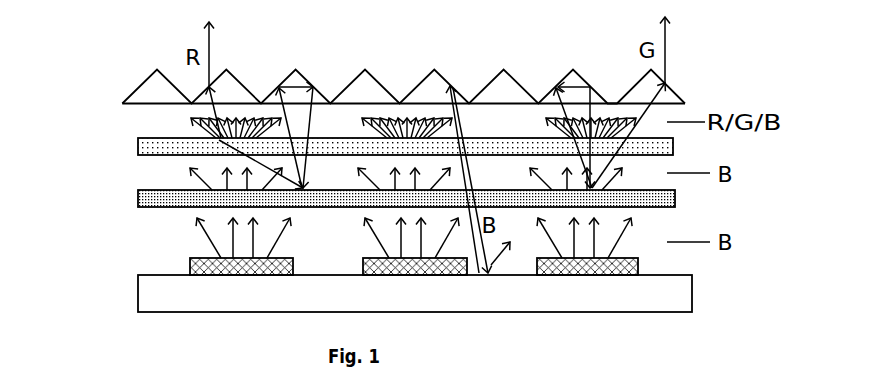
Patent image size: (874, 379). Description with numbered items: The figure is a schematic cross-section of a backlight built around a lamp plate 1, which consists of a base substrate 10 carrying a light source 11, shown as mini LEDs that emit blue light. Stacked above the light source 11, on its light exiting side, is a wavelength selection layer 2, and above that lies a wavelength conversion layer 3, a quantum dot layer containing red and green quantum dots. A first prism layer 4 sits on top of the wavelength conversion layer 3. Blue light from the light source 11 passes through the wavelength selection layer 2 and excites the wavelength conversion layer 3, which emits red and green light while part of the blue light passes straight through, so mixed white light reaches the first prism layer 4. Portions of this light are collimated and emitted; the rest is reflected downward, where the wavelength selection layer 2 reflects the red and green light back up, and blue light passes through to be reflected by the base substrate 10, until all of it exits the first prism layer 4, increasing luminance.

The lamp plate 1 is at (355, 265).
The base substrate 10 is at (167, 297).
The light source 11 is at (192, 262).
The wavelength selection layer 2 is at (167, 198).
The wavelength conversion layer 3 is at (167, 147).
The first prism layer 4 is at (167, 95).